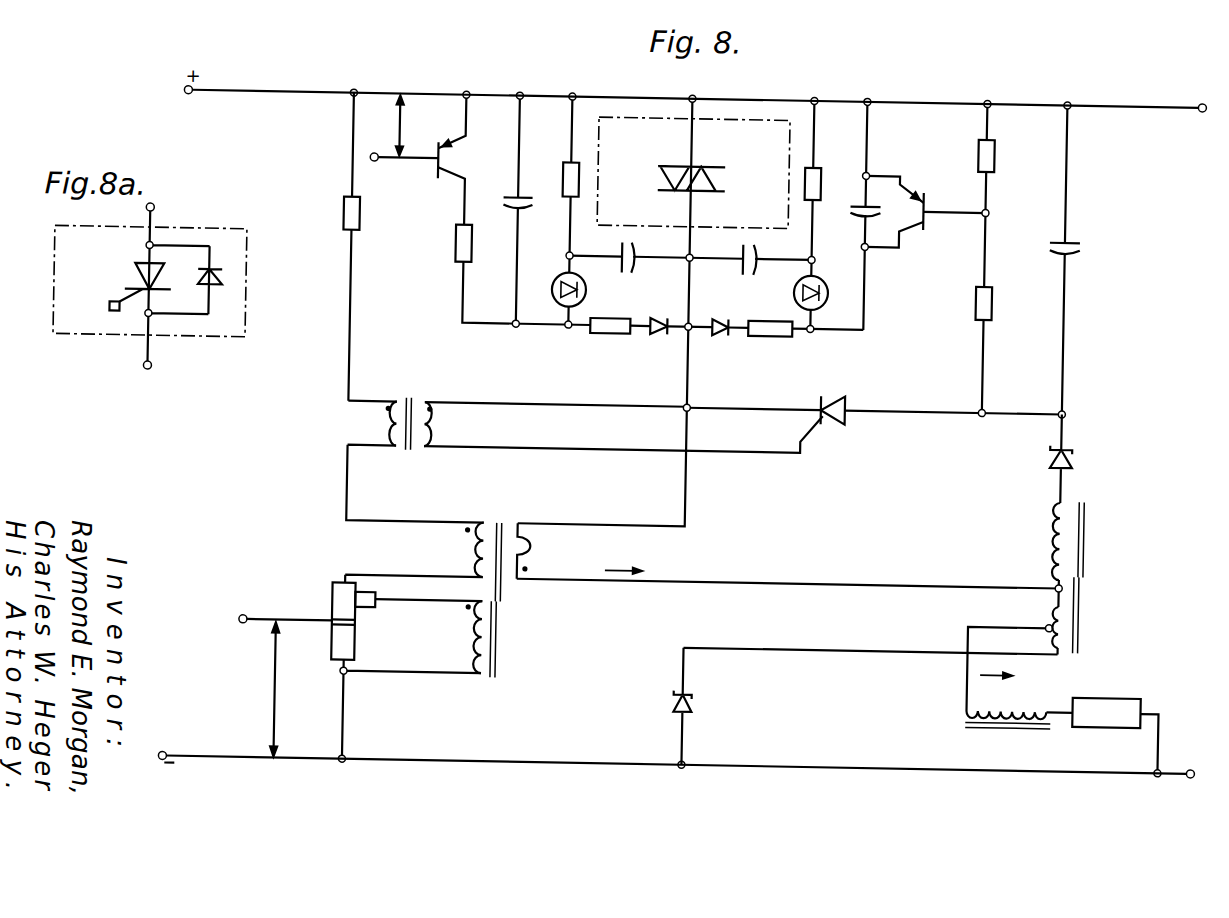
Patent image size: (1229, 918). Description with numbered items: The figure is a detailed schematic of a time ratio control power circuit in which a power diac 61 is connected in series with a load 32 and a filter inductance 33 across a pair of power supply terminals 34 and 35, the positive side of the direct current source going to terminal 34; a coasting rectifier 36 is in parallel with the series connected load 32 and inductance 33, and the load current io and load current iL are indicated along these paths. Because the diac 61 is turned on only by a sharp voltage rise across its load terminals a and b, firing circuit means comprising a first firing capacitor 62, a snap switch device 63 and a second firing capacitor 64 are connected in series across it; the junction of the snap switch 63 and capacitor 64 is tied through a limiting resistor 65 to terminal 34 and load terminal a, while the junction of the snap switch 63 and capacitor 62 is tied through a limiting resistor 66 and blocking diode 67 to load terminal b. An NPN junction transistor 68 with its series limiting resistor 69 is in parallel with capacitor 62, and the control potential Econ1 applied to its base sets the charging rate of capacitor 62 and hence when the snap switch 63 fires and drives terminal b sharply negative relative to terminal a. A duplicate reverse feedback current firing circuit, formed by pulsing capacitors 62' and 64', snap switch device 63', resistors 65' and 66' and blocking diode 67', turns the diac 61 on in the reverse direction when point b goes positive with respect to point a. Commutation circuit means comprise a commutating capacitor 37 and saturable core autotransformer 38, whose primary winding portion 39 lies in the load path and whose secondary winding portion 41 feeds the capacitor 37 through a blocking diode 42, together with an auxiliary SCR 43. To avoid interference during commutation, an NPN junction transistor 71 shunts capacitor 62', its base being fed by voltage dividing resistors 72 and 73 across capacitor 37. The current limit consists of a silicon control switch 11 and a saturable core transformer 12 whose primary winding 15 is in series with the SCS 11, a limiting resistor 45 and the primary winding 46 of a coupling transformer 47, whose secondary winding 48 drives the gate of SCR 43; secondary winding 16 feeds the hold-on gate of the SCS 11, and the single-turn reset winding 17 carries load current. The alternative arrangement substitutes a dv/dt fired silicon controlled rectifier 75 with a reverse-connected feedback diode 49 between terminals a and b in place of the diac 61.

In FIG. 8, the silicon control switch 11 is at (334, 601).
In FIG. 8, the saturable core transformer 12 is at (533, 627).
In FIG. 8, the primary winding 15 is at (468, 555).
In FIG. 8, the secondary winding 16 is at (470, 653).
In FIG. 8, the reset winding 17 is at (533, 551).
In FIG. 8, the load 32 is at (1124, 690).
In FIG. 8, the filter inductance 33 is at (968, 699).
In FIG. 8, the power supply terminal 34 is at (435, 96).
In FIG. 8, the power supply terminal 35 is at (503, 764).
In FIG. 8, the coasting rectifier 36 is at (699, 703).
In FIG. 8, the commutating capacitor 37 is at (1072, 237).
In FIG. 8, the saturable core autotransformer 38 is at (1121, 594).
In FIG. 8, the primary winding portion 39 is at (1052, 610).
In FIG. 8, the secondary winding portion 41 is at (1050, 535).
In FIG. 8, the blocking diode 42 is at (1076, 452).
In FIG. 8, the auxiliary SCR 43 is at (831, 424).
In FIG. 8, the limiting resistor 45 is at (340, 220).
In FIG. 8, the primary winding 46 is at (385, 429).
In FIG. 8, the coupling transformer 47 is at (410, 403).
In FIG. 8, the secondary winding 48 is at (434, 428).
In FIG. 8A, the feedback diode 49 is at (221, 286).
In FIG. 8, the power diac 61 is at (701, 167).
In FIG. 8, the first firing capacitor 62 is at (524, 190).
In FIG. 8, the pulsing capacitor 62' is at (856, 195).
In FIG. 8, the snap switch device 63 is at (557, 275).
In FIG. 8, the snap switch device 63' is at (826, 278).
In FIG. 8, the second firing capacitor 64 is at (646, 268).
In FIG. 8, the pulsing capacitor 64' is at (738, 280).
In FIG. 8, the limiting resistor 65 is at (558, 162).
In FIG. 8, the limiting resistor 65' is at (832, 167).
In FIG. 8, the limiting resistor 66 is at (599, 343).
In FIG. 8, the limiting resistor 66' is at (770, 346).
In FIG. 8, the blocking diode 67 is at (645, 342).
In FIG. 8, the blocking diode 67' is at (716, 345).
In FIG. 8, the NPN junction transistor 68 is at (433, 170).
In FIG. 8, the limiting resistor 69 is at (453, 262).
In FIG. 8, the NPN junction transistor 71 is at (922, 224).
In FIG. 8, the voltage dividing resistor 72 is at (990, 156).
In FIG. 8, the voltage dividing resistor 73 is at (990, 302).
In FIG. 8A, the dv/dt fired silicon controlled rectifier 75 is at (131, 276).
In FIG. 8, the load terminal a is at (690, 98).
In FIG. 8A, the load terminal a is at (151, 217).
In FIG. 8, the load terminal b is at (690, 261).
In FIG. 8A, the load terminal b is at (151, 375).
In FIG. 8, the control voltage Econ1 is at (342, 426).
In FIG. 8, the output current io is at (610, 568).
In FIG. 8, the load current iL is at (1008, 677).